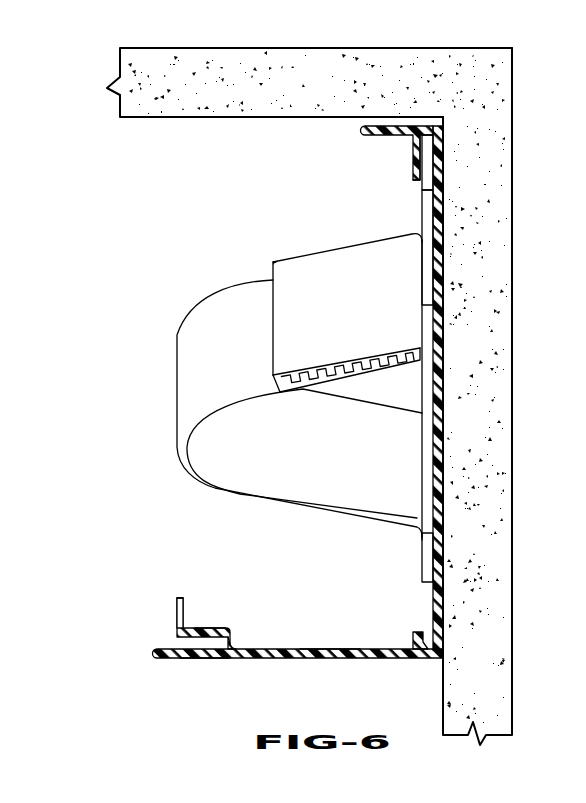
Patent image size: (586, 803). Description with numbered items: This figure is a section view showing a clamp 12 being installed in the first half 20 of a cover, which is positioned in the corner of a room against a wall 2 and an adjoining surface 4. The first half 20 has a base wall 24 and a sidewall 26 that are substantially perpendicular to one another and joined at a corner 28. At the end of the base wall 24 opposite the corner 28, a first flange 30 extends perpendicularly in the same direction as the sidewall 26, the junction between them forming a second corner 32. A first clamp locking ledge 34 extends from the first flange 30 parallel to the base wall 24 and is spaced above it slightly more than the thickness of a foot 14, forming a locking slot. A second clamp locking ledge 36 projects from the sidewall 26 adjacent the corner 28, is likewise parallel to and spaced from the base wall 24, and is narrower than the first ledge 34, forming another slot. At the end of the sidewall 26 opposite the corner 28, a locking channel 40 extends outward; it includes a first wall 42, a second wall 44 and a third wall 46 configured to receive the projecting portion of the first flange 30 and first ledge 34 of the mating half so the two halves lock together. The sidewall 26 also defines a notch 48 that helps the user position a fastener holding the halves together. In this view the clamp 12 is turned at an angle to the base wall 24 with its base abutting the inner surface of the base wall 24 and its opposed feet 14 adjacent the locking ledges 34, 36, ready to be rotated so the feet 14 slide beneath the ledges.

The wall 2 is at (503, 363).
The ceiling slab 4 is at (208, 112).
The clamp 12 is at (173, 360).
The feet 14 is at (422, 281).
The first half 20 is at (292, 661).
The base wall 24 is at (436, 452).
The sidewall 26 is at (325, 649).
The corner 28 is at (446, 657).
The first flange 30 is at (373, 137).
The second corner 32 is at (440, 128).
The first clamp locking ledge 34 is at (414, 170).
The second clamp locking ledge 36 is at (412, 641).
The locking channel 40 is at (174, 612).
The first wall 42 is at (238, 645).
The second wall 44 is at (209, 628).
The third wall 46 is at (178, 605).
The notch 48 is at (200, 658).